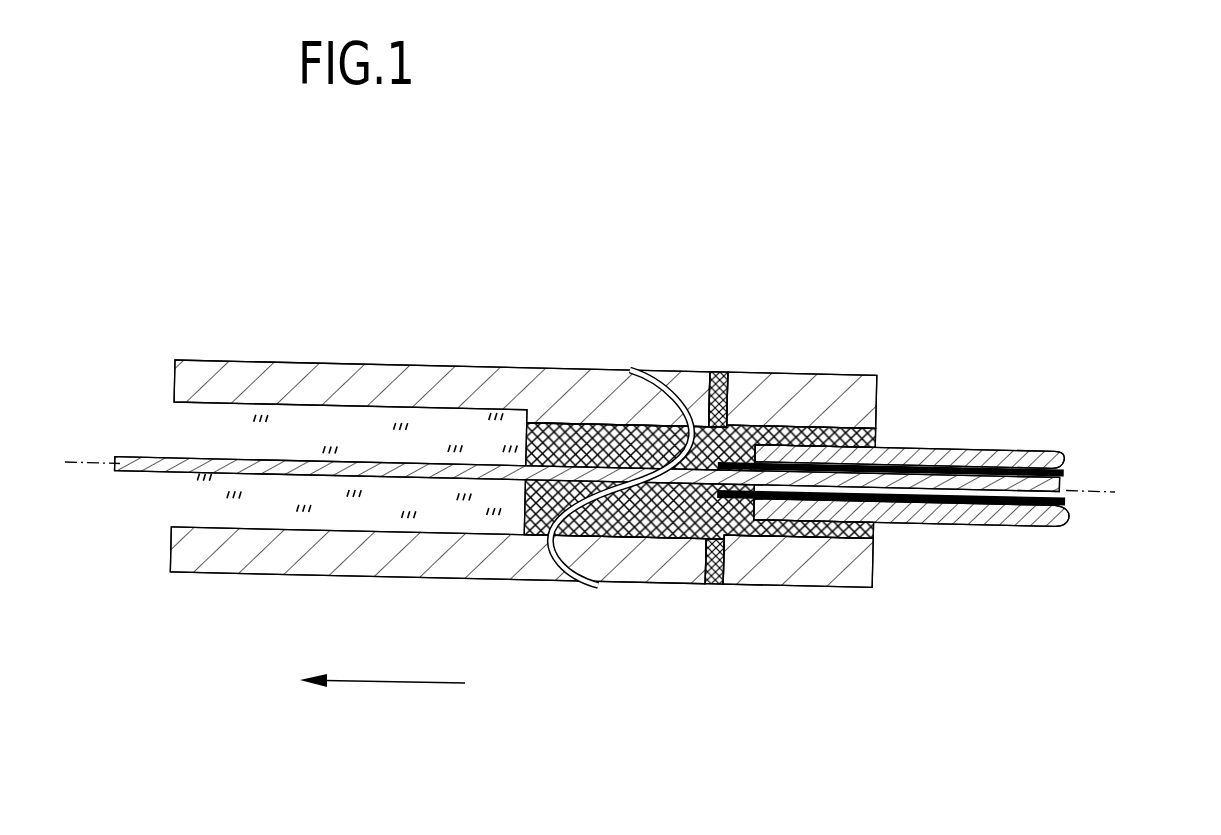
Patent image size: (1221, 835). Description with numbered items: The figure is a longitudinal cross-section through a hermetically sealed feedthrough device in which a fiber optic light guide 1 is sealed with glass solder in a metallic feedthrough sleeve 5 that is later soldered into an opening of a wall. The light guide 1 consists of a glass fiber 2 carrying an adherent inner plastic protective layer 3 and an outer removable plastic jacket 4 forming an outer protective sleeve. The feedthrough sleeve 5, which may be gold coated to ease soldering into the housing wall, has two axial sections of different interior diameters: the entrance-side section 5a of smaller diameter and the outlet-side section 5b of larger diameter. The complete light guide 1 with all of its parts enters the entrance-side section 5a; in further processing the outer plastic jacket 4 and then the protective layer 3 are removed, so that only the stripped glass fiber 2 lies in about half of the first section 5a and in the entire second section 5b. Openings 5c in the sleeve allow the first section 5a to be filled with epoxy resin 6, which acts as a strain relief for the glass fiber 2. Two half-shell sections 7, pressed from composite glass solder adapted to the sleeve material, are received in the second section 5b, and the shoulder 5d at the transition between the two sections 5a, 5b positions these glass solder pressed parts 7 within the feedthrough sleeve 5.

The fiber optic light guide 1 is at (611, 476).
The glass fiber 2 is at (313, 463).
The inner plastic protective layer 3 is at (1070, 473).
The outer removable plastic jacket 4 is at (1030, 445).
The feedthrough sleeve 5 is at (513, 432).
The entrance-side section 5a is at (768, 427).
The outlet-side section 5b is at (427, 405).
The openings 5c is at (720, 377).
The shoulder 5d is at (515, 410).
The epoxy resin 6 is at (699, 592).
The half-shell sections 7 is at (95, 620).